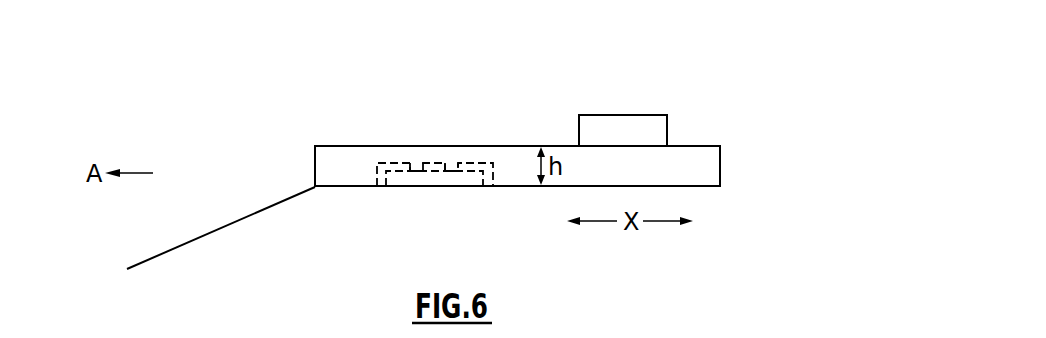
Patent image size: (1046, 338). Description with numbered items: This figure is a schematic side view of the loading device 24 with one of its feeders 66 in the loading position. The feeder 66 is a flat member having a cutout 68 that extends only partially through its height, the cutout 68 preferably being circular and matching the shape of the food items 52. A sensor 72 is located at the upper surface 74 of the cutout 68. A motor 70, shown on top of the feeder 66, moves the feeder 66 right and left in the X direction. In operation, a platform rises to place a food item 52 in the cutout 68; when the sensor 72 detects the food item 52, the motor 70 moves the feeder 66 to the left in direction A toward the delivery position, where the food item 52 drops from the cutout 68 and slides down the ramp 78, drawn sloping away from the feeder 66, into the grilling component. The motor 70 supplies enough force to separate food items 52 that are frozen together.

The loading device 24 is at (762, 120).
The food item 52 is at (450, 180).
The feeder 66 is at (720, 160).
The cutout 68 is at (443, 163).
The motor 70 is at (618, 115).
The sensor 72 is at (412, 173).
The upper surface 74 is at (400, 162).
The ramp 78 is at (268, 207).